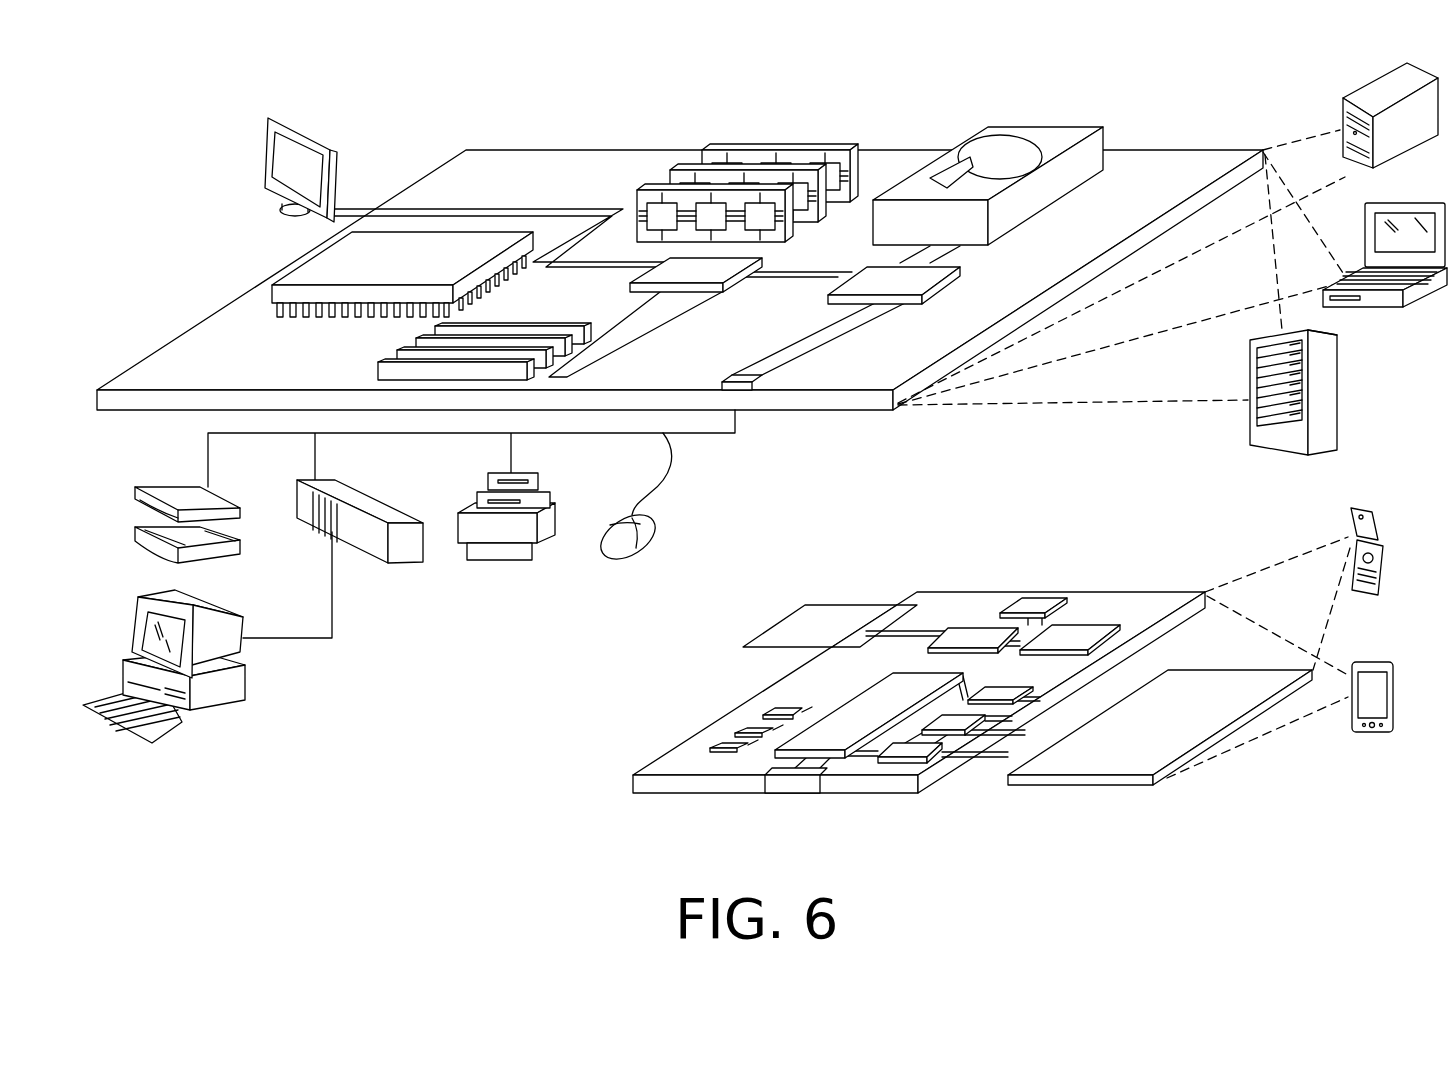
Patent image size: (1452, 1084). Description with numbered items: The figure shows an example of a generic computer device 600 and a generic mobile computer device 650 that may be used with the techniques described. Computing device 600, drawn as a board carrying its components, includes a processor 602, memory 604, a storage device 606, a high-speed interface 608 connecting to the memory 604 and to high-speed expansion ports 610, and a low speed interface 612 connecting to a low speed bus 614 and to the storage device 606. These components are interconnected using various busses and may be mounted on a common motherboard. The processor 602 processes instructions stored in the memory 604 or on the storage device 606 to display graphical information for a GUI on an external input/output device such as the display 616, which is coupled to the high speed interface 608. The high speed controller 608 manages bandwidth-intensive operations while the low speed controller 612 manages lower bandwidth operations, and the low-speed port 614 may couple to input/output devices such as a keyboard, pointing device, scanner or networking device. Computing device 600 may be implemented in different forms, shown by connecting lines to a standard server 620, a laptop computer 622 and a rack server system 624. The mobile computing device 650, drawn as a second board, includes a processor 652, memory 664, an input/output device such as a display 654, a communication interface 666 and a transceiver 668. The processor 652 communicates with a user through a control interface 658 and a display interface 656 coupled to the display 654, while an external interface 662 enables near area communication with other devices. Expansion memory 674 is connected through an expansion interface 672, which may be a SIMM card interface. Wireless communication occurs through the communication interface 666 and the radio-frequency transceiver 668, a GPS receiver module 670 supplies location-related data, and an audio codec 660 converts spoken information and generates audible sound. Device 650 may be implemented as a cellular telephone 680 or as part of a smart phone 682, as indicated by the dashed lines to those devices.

In FIG. 6, the computing device 600 is at (405, 90).
In FIG. 6, the processor 602 is at (300, 266).
In FIG. 6, the memory 604 is at (780, 147).
In FIG. 6, the storage device 606 is at (1033, 130).
In FIG. 6, the high-speed interface 608 is at (714, 276).
In FIG. 6, the high-speed expansion ports 610 is at (402, 355).
In FIG. 6, the low speed interface 612 is at (868, 276).
In FIG. 6, the low speed bus 614 is at (745, 376).
In FIG. 6, the display 616 is at (272, 118).
In FIG. 6, the standard server 620 is at (1365, 95).
In FIG. 6, the laptop computer 622 is at (1422, 205).
In FIG. 6, the rack server system 624 is at (1338, 393).
The mobile computer device 650 is at (578, 806).
The processor 652 is at (832, 720).
The display 654 is at (1205, 688).
The display interface 656 is at (918, 750).
The control interface 658 is at (963, 720).
The audio codec 660 is at (1005, 690).
The external interface 662 is at (793, 780).
The memory 664 is at (737, 730).
The communication interface 666 is at (972, 628).
The transceiver 668 is at (1080, 625).
The GPS receiver module 670 is at (1035, 603).
The expansion interface 672 is at (897, 604).
The expansion memory 674 is at (808, 604).
The cellular telephone 680 is at (1355, 510).
The smart phone 682 is at (1362, 662).